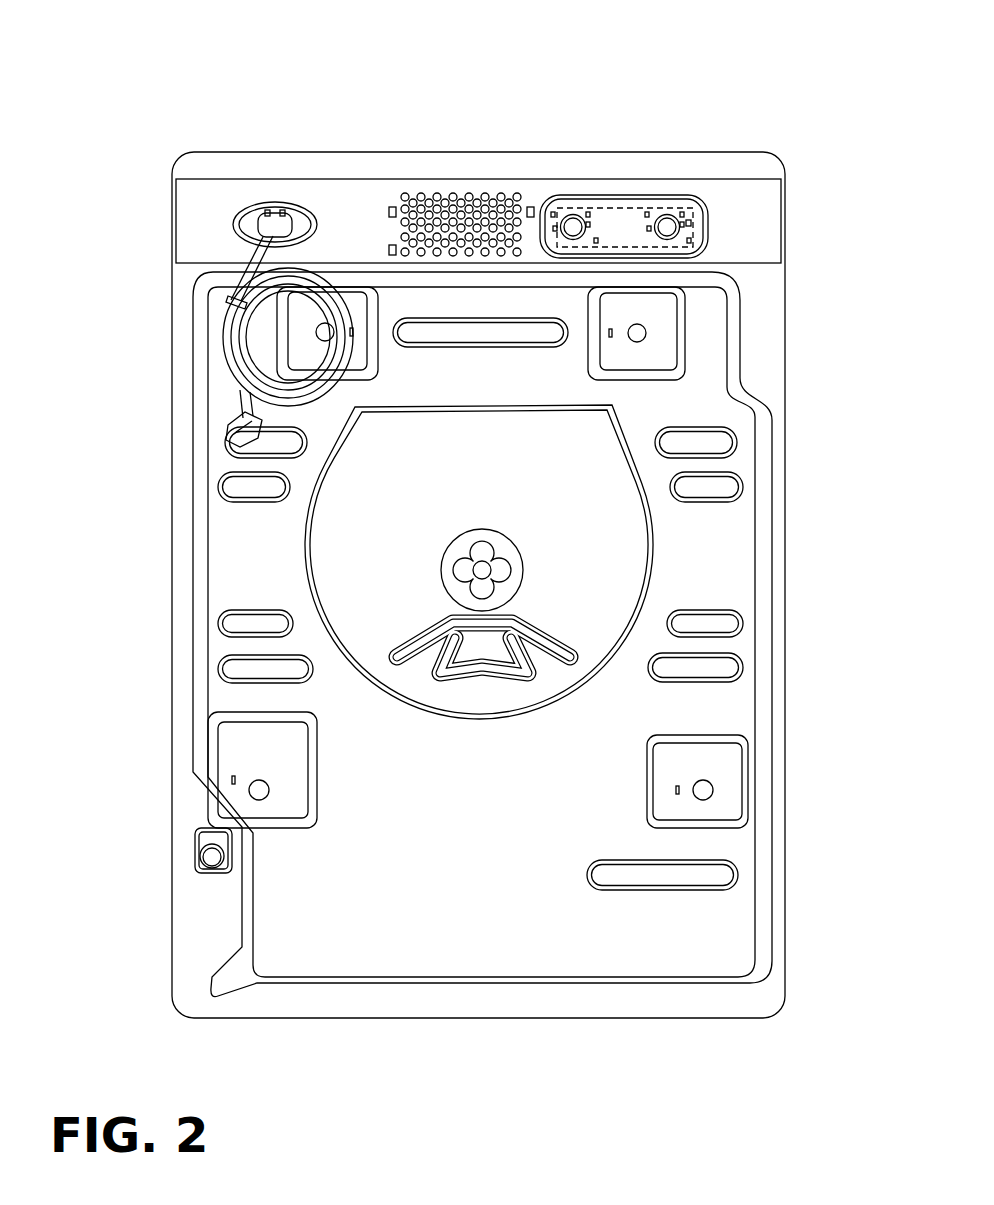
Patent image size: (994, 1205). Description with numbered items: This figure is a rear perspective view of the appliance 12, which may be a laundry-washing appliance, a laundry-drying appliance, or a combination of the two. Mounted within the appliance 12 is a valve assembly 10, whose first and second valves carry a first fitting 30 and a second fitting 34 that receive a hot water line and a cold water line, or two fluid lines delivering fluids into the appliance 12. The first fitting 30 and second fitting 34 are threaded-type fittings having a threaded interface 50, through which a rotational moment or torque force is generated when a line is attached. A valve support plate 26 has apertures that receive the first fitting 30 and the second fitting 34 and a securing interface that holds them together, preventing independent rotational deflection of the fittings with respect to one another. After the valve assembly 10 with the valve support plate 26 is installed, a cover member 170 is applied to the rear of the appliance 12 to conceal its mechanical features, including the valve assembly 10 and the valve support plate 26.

The appliance 12 is at (440, 124).
The valve assembly 10 is at (586, 184).
The valve support plate 26 is at (634, 194).
The first fitting 30 is at (575, 215).
The second fitting 34 is at (670, 216).
The threaded interface 50 is at (692, 223).
The cover member 170 is at (753, 296).